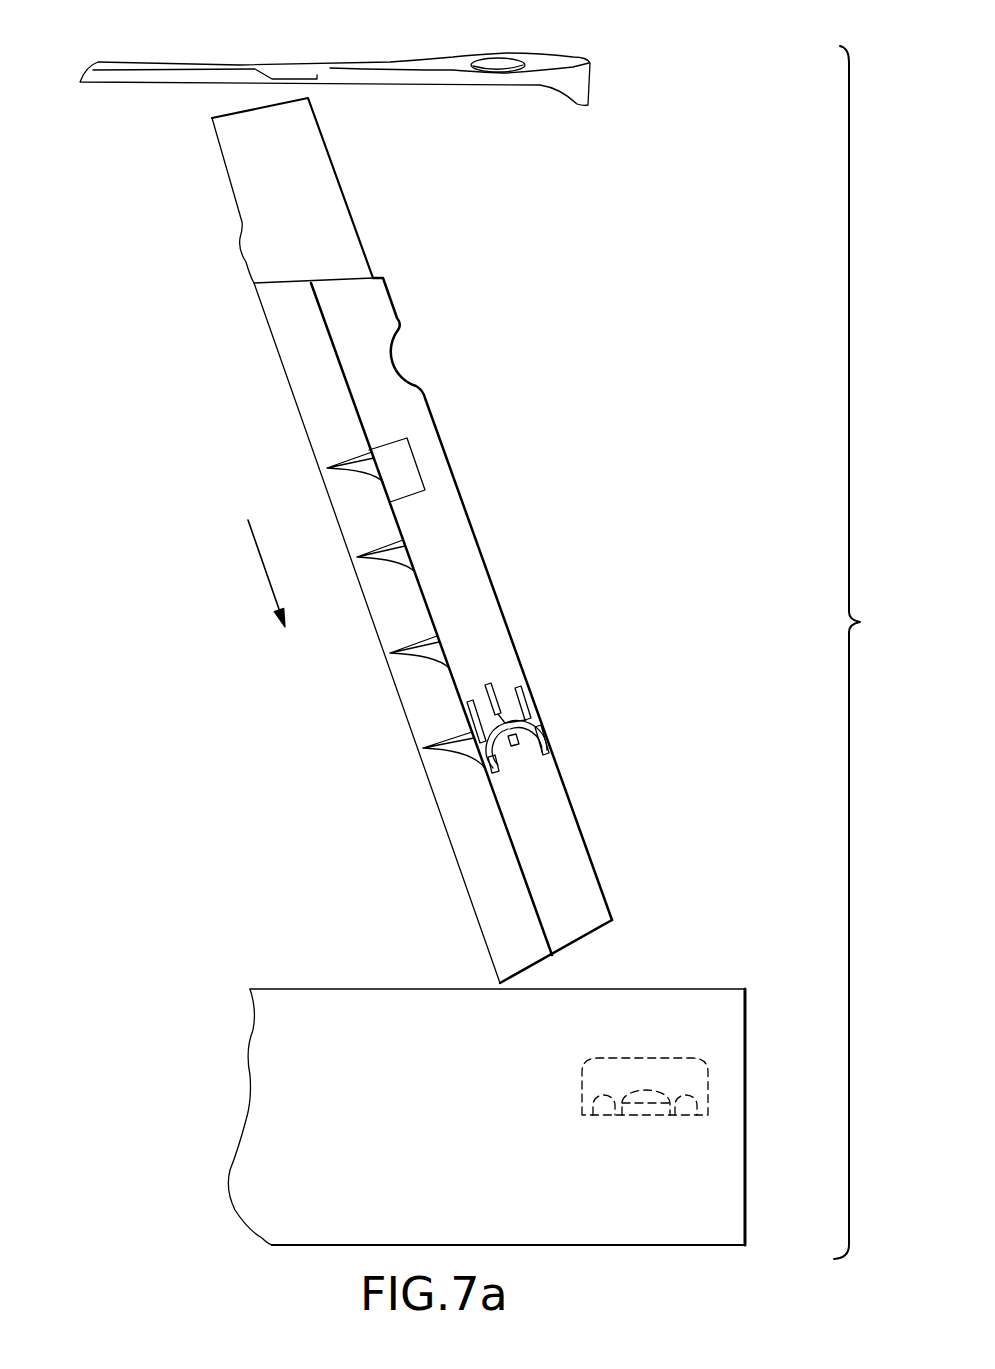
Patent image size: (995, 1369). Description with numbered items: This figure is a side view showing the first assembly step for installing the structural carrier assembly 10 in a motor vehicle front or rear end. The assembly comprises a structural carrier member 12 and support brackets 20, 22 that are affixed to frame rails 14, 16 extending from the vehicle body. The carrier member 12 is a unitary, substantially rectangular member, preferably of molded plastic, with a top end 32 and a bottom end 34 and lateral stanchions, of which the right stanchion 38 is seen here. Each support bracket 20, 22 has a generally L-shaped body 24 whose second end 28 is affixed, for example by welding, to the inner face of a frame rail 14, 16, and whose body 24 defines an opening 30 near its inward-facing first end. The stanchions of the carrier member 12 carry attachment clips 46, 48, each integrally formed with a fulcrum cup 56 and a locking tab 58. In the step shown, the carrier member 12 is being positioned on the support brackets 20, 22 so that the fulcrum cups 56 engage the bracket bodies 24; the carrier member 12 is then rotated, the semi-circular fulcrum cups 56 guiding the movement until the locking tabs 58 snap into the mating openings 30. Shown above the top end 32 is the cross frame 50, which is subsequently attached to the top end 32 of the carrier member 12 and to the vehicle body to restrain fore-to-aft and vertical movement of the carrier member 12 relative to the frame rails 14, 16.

The structural carrier assembly 10 is at (869, 652).
The structural carrier member 12 is at (404, 540).
The frame rail 14 is at (530, 1100).
The frame rail 16 is at (530, 1100).
The support bracket 20 is at (665, 1035).
The support bracket 22 is at (647, 1068).
The support bracket body 24 is at (707, 1095).
The second end 28 is at (695, 1078).
The opening 30 is at (650, 1097).
The top end 32 is at (227, 116).
The bottom end 34 is at (590, 937).
The right stanchion 38 is at (425, 545).
The attachment clip 46 is at (568, 725).
The attachment clip 48 is at (542, 742).
The cross frame 50 is at (437, 57).
The fulcrum cup 56 is at (493, 758).
The locking tab 58 is at (513, 738).